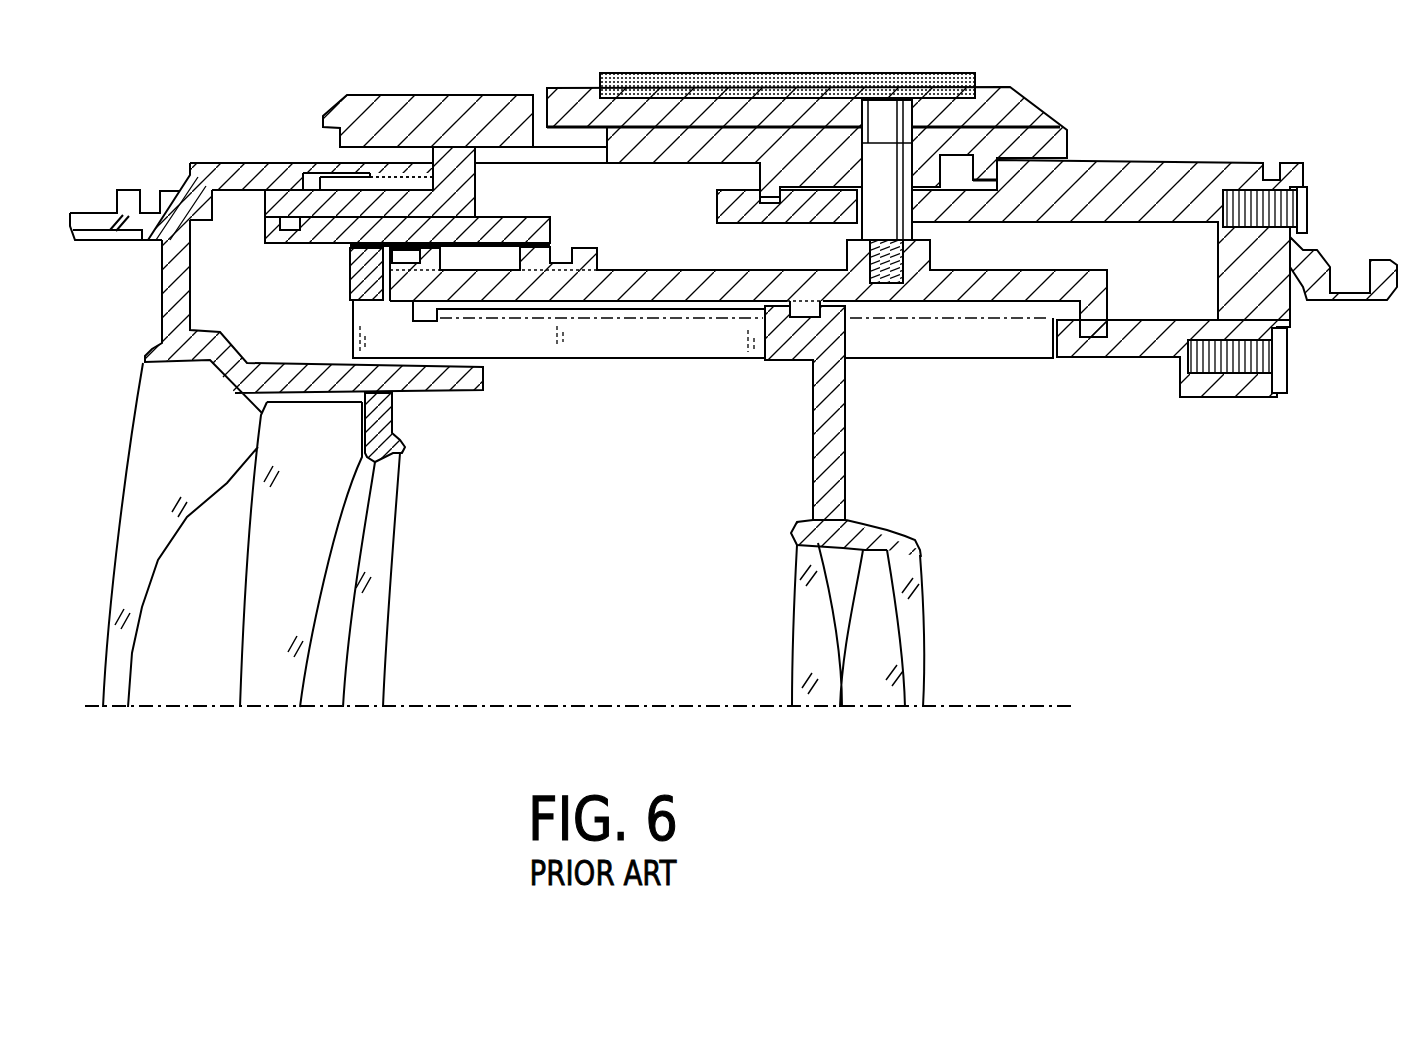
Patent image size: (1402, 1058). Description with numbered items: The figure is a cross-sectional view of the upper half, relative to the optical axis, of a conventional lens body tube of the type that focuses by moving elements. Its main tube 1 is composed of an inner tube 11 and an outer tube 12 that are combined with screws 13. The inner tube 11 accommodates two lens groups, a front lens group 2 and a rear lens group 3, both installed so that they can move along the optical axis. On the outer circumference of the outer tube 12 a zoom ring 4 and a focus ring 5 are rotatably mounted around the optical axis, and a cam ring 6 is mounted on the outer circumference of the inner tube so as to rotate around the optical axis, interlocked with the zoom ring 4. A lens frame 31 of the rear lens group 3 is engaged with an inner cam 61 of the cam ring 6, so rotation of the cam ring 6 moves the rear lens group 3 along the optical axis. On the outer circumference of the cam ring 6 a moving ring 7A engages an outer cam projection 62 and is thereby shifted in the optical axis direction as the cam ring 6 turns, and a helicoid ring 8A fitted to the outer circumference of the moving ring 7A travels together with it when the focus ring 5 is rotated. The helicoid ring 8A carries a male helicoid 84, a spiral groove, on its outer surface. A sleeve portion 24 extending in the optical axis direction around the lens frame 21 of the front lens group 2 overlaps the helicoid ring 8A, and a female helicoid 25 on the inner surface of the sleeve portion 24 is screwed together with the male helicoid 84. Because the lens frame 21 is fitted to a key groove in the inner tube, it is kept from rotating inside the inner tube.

The main tube 1 is at (1208, 132).
The front lens group 2 is at (298, 746).
The rear lens group 3 is at (847, 746).
The zoom ring 4 is at (822, 72).
The focus ring 5 is at (420, 95).
The cam ring 6 is at (686, 287).
The moving ring 7A is at (523, 243).
The helicoid ring 8A is at (478, 205).
The inner tube 11 is at (1122, 352).
The outer tube 12 is at (1118, 177).
The screws 13 is at (1270, 353).
The lens frame 21 is at (172, 292).
The sleeve portion 24 is at (202, 190).
The female helicoid 25 is at (378, 176).
The lens frame 31 is at (837, 453).
The inner cam 61 is at (807, 323).
The outer cam projection 62 is at (583, 262).
The male helicoid 84 is at (335, 175).